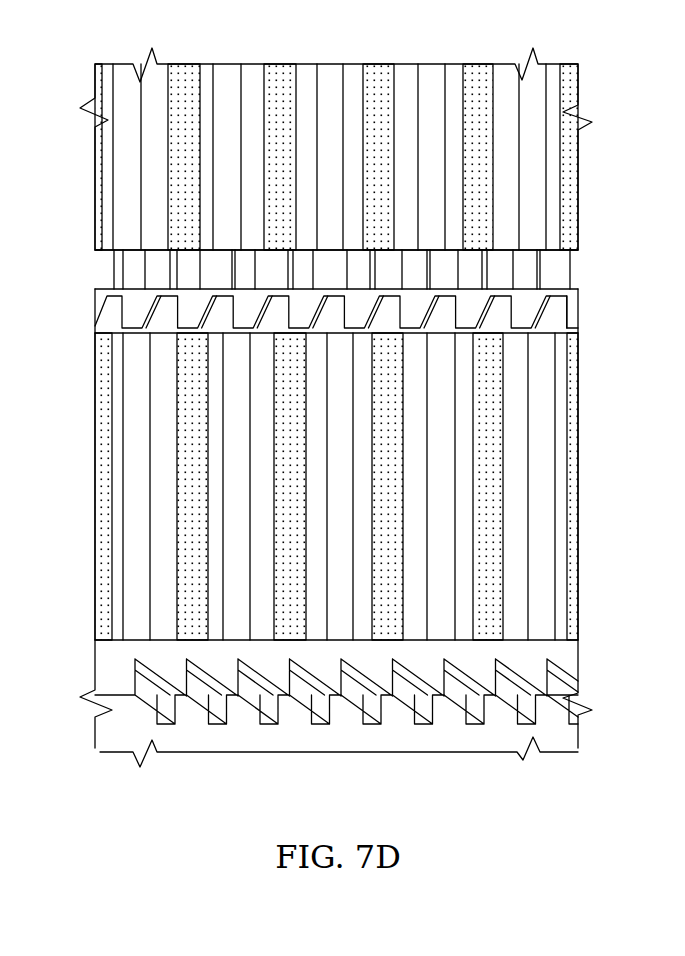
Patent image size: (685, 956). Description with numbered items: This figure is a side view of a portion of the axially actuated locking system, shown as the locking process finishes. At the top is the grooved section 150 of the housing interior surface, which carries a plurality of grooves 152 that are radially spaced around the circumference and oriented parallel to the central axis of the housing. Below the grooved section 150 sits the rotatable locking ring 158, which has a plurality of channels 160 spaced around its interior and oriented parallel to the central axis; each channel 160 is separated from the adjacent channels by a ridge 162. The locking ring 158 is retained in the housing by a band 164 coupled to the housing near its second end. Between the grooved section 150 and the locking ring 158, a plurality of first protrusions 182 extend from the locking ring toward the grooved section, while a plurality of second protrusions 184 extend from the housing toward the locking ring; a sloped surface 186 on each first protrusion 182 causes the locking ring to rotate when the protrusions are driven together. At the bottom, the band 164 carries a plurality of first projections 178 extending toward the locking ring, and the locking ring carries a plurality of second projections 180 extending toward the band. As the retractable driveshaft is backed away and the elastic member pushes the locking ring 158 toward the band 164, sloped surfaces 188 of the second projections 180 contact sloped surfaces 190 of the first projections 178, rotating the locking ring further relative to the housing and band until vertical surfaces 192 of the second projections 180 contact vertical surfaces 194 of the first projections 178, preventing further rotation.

The grooved section 150 is at (580, 161).
The grooves 152 is at (228, 75).
The locking ring 158 is at (351, 486).
The channels 160 is at (337, 463).
The ridge 162 is at (483, 438).
The band 164 is at (553, 753).
The first projections 178 is at (138, 717).
The second projections 180 is at (117, 672).
The first protrusions 182 is at (162, 320).
The second protrusions 184 is at (133, 278).
The sloped surface 186 is at (540, 313).
The sloped surfaces 188 is at (313, 678).
The sloped surfaces 190 is at (395, 713).
The vertical surfaces 192 is at (426, 696).
The vertical surfaces 194 is at (495, 718).